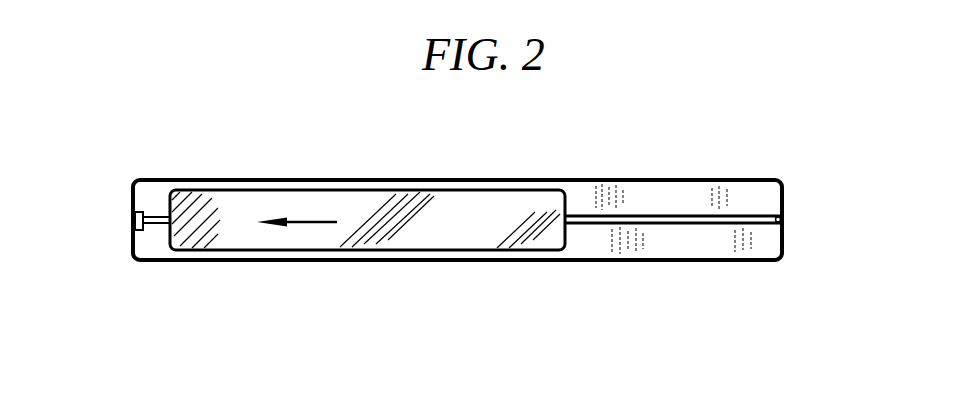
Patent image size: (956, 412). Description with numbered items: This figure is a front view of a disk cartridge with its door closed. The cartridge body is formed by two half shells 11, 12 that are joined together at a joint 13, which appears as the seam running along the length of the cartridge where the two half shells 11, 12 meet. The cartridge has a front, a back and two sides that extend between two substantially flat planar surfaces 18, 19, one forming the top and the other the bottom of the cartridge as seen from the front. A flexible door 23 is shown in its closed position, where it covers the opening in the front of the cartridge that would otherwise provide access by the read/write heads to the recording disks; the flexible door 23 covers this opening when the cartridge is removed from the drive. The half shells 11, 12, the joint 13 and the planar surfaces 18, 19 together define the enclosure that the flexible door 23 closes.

The half shell 11 is at (757, 187).
The half shell 12 is at (710, 243).
The joint 13 is at (135, 217).
The substantially flat planar surface 18 is at (570, 262).
The substantially flat planar surface 19 is at (570, 178).
The flexible door 23 is at (487, 198).